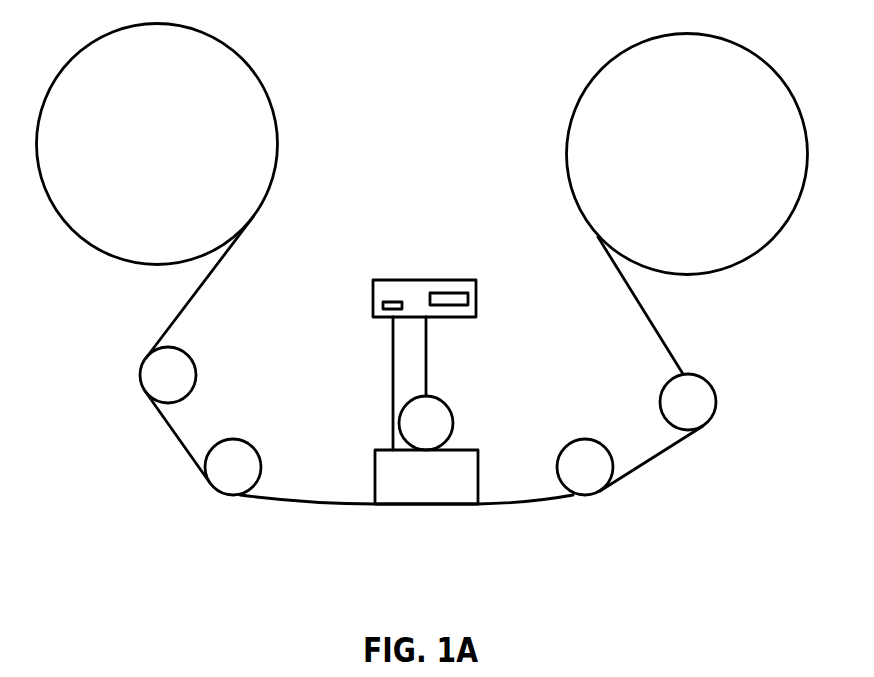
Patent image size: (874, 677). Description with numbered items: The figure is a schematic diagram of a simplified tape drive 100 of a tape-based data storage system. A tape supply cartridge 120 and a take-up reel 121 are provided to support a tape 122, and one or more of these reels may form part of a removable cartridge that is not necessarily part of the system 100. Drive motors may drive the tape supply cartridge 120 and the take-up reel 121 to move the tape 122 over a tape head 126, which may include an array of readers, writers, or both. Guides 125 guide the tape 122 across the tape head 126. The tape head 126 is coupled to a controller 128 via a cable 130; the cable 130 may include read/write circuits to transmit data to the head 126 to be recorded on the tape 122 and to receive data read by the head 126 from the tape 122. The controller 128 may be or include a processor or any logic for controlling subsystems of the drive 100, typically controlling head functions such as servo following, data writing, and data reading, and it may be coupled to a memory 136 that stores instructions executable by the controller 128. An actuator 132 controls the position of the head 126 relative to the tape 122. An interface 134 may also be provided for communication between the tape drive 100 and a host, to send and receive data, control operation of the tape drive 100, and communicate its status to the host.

The tape drive 100 is at (122, 310).
The tape supply cartridge 120 is at (277, 112).
The take-up reel 121 is at (762, 250).
The tape 122 is at (308, 502).
The guides 125 is at (231, 440).
The tape head 126 is at (478, 476).
The controller 128 is at (423, 278).
The cable 130 is at (393, 420).
The actuator 132 is at (448, 401).
The interface 134 is at (458, 292).
The memory 136 is at (386, 300).